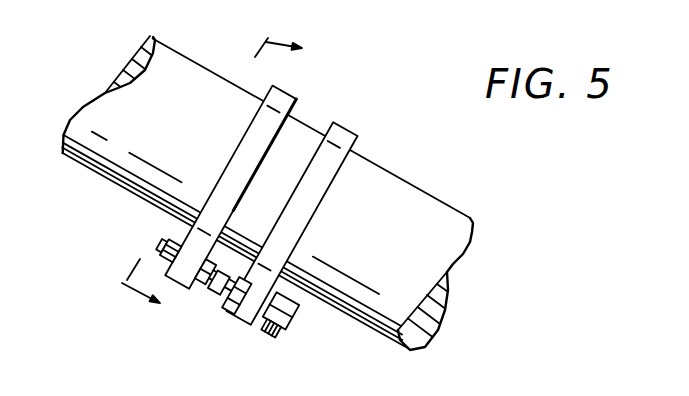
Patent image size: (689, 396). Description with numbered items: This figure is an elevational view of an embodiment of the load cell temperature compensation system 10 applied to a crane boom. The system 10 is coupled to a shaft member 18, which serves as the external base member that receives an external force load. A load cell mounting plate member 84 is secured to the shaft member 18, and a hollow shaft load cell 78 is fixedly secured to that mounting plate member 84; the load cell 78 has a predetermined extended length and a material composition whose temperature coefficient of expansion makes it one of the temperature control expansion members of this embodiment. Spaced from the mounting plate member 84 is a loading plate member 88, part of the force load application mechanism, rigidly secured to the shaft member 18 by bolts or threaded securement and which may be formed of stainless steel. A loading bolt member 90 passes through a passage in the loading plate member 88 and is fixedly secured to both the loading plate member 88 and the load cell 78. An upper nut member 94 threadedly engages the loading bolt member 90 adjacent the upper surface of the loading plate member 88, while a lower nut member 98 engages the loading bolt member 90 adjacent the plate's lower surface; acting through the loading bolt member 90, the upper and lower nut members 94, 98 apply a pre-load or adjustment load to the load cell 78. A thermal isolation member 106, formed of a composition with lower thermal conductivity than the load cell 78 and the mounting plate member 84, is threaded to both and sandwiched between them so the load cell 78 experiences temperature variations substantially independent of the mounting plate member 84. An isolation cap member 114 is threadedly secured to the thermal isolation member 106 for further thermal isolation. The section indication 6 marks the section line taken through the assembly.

The section line 6- 6 is at (200, 155).
The load cell temperature compensation system 10 is at (345, 95).
The shaft member 18 is at (428, 189).
The hollow shaft load cell 78 is at (205, 302).
The load cell mounting plate member 84 is at (343, 132).
The loading plate member 88 is at (283, 93).
The loading bolt member 90 is at (168, 243).
The upper nut member 94 is at (171, 259).
The lower nut member 98 is at (213, 257).
The thermal isolation member 106 is at (226, 305).
The isolation cap member 114 is at (291, 320).